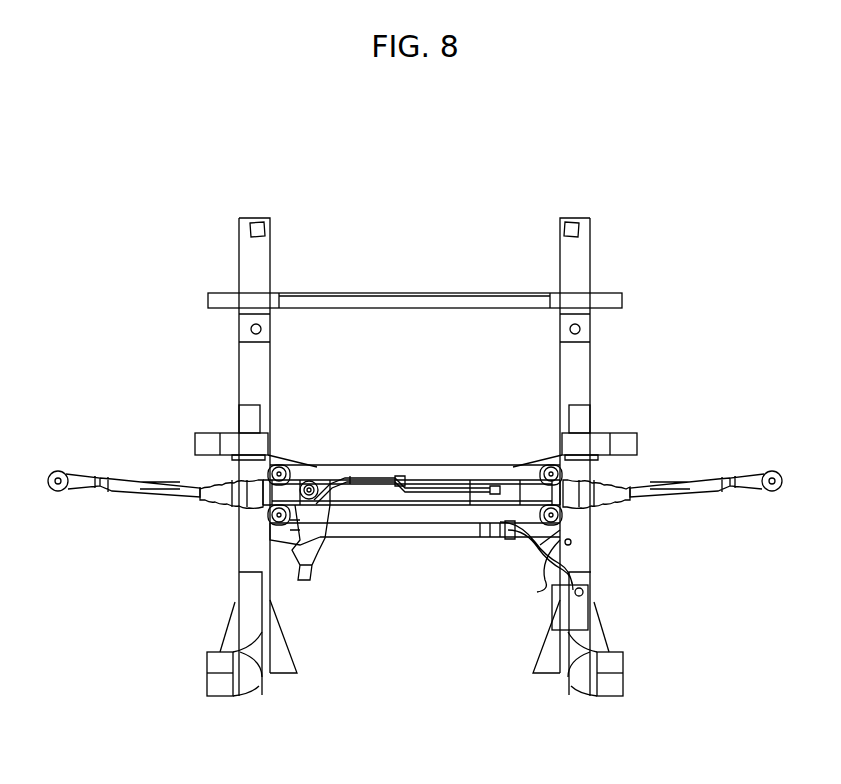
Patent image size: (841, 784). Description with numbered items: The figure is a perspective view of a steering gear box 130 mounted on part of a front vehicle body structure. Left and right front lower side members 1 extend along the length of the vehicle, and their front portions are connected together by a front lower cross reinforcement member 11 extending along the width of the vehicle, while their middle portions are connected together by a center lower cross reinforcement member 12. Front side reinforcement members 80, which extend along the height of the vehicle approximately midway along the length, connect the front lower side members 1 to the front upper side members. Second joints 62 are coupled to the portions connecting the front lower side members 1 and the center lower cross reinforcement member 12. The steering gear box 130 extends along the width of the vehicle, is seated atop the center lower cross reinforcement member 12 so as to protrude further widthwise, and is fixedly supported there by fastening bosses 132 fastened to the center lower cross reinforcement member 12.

The front lower side members 1 is at (247, 220).
The front lower cross reinforcement member 11 is at (414, 290).
The front side reinforcement members 80 is at (206, 433).
The second joints 62 is at (248, 471).
The fastening bosses 132 is at (273, 480).
The steering gear box 130 is at (402, 522).
The center lower cross reinforcement member 12 is at (450, 517).